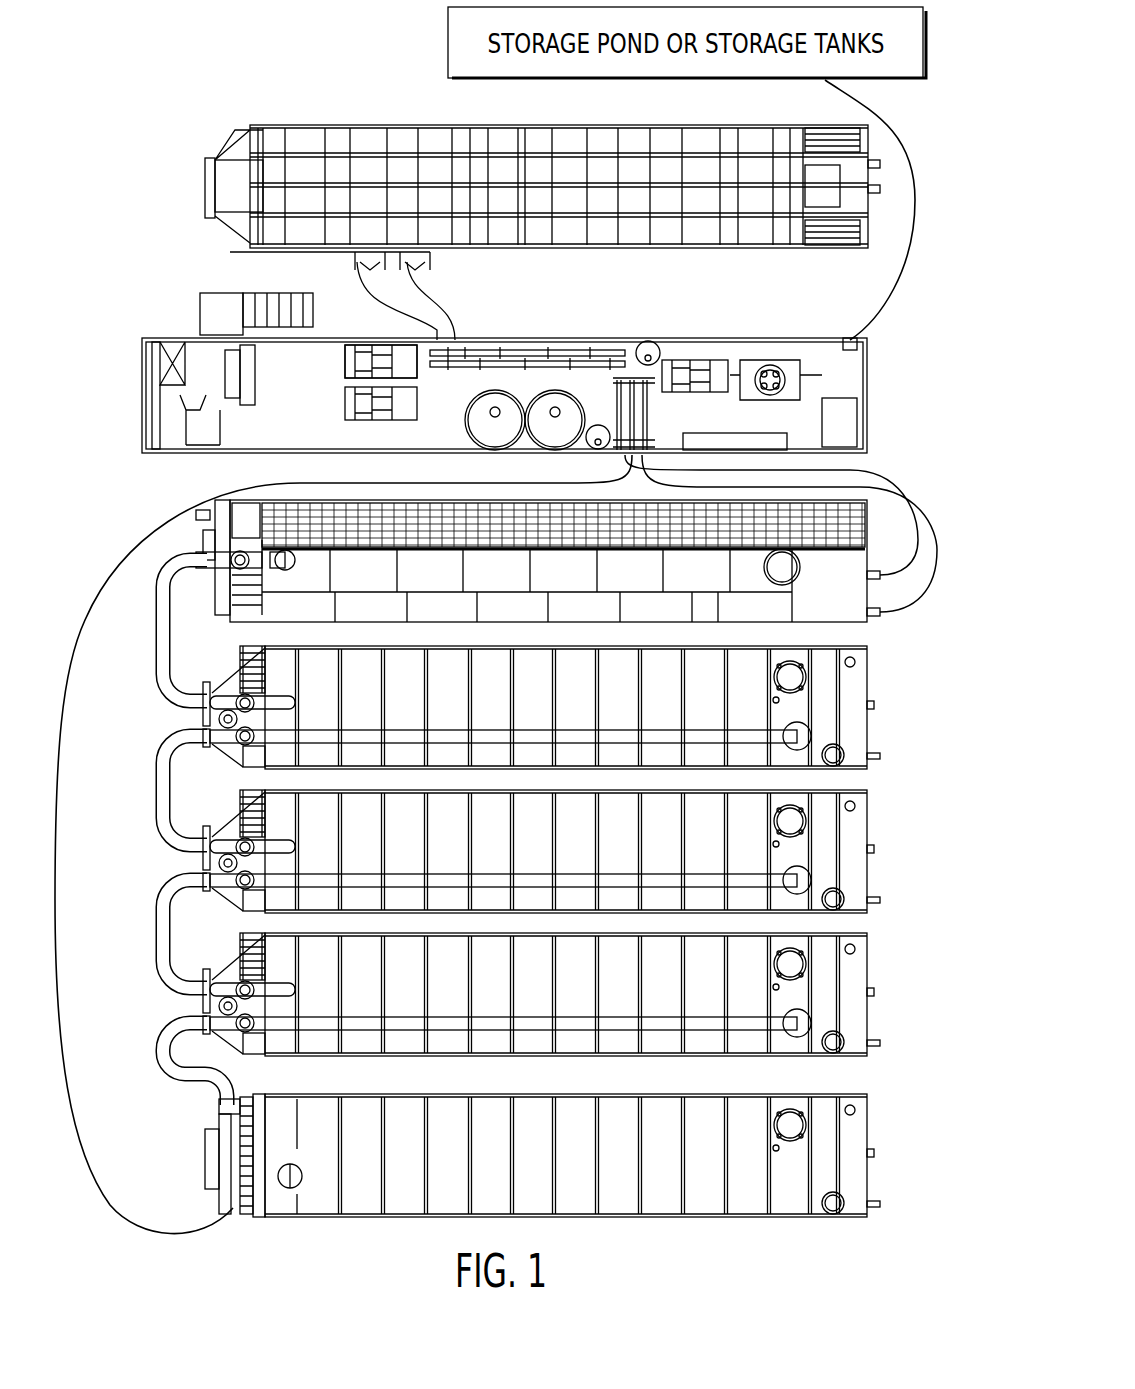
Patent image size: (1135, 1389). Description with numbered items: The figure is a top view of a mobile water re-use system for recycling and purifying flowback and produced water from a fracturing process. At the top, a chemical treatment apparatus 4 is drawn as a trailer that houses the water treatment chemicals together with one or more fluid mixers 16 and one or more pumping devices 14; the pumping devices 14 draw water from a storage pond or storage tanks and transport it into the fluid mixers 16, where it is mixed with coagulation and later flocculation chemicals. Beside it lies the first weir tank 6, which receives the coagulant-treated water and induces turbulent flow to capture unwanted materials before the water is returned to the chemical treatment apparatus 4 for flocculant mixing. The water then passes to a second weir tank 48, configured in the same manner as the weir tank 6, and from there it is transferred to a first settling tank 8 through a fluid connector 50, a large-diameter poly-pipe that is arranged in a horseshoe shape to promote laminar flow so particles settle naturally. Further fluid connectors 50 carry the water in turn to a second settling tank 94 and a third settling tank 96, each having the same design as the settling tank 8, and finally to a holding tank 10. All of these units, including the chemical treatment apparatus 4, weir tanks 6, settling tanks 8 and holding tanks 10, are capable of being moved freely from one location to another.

The chemical treatment apparatus 4 is at (142, 372).
The weir tank 6 is at (205, 170).
The settling tank 8 is at (867, 683).
The holding tank 10 is at (867, 1130).
The pumping device 14 is at (375, 345).
The fluid mixer 16 is at (575, 352).
The second weir tank 48 is at (868, 523).
The fluid connector 50 is at (155, 643).
The second settling tank 94 is at (867, 822).
The third settling tank 96 is at (867, 965).